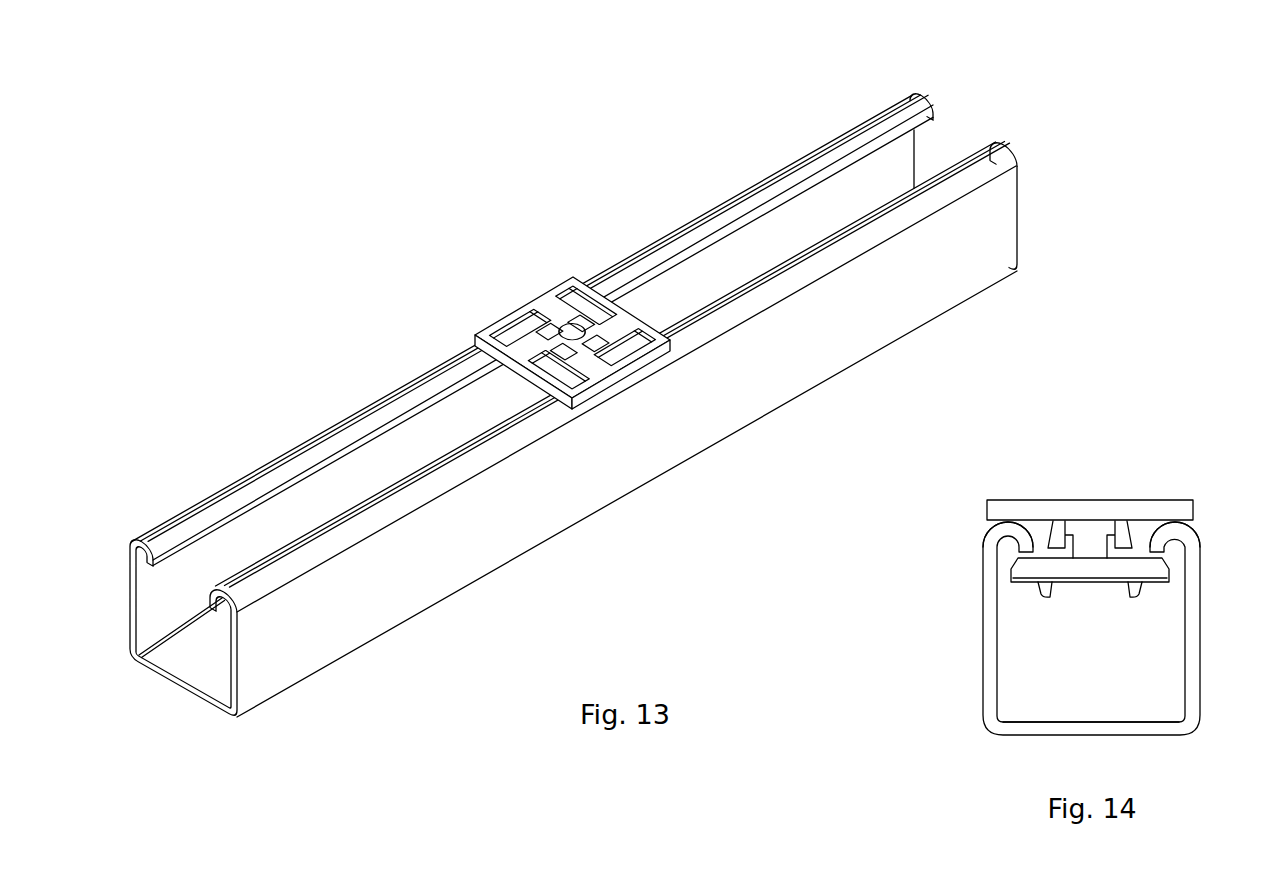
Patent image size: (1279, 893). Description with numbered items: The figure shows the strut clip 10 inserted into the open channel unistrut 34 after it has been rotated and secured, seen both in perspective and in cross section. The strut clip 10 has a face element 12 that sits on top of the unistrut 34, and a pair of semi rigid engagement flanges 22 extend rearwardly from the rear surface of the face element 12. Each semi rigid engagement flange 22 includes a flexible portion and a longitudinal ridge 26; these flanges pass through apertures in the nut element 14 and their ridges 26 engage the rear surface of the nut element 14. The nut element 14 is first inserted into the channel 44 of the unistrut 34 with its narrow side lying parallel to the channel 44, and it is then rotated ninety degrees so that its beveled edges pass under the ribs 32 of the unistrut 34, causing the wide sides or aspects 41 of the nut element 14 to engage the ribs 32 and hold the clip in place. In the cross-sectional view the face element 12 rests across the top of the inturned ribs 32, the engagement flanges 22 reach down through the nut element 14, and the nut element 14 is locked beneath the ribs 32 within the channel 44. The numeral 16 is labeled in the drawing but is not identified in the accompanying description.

In FIG. 13, the strut clip 10 is at (619, 302).
In FIG. 13, the face element 12 is at (619, 343).
In FIG. 14, the face element 12 is at (1090, 508).
In FIG. 14, the nut element 14 is at (1090, 604).
In FIG. 13, the aperture 16 is at (572, 331).
In FIG. 14, the semi rigid engagement flanges 22 is at (1062, 532).
In FIG. 14, the longitudinal ridge 26 is at (1040, 590).
In FIG. 13, the ribs 32 is at (930, 106).
In FIG. 14, the ribs 32 is at (1025, 551).
In FIG. 13, the open channel unistrut 34 is at (604, 399).
In FIG. 14, the open channel unistrut 34 is at (1092, 653).
In FIG. 13, the wide sides or aspects 41 is at (573, 337).
In FIG. 14, the wide sides or aspects 41 is at (1110, 583).
In FIG. 14, the channel 44 is at (1082, 698).